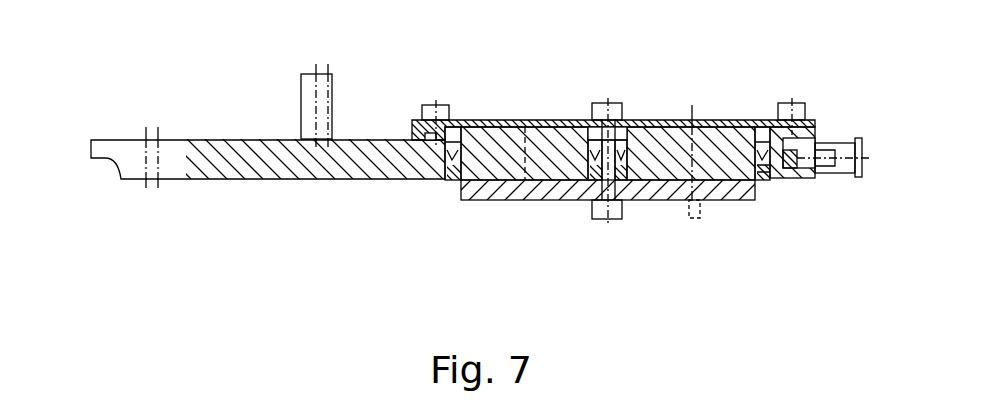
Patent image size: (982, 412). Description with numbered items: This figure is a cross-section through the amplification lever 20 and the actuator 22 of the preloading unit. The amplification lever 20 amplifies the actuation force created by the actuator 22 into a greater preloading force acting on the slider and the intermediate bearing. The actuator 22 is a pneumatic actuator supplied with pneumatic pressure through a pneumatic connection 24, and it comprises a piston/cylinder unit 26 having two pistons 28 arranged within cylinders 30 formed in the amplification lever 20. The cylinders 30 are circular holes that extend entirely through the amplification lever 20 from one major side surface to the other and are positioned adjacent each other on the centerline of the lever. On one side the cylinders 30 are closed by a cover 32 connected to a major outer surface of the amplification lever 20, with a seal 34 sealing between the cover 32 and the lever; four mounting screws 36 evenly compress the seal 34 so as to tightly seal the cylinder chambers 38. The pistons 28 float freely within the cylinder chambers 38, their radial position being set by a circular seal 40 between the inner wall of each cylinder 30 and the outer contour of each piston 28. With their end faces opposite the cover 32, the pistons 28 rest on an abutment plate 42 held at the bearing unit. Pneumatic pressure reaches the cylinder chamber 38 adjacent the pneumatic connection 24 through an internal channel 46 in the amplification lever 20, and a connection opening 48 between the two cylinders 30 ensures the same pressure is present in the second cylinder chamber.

The amplification lever 20 is at (376, 166).
The actuator 22 is at (605, 237).
The pneumatic connection 24 is at (842, 160).
The piston/cylinder unit 26 is at (507, 155).
The piston 28 is at (494, 143).
The cylinder 30 is at (445, 140).
The cover 32 is at (539, 125).
The seal 34 is at (422, 140).
The mounting screw 36 is at (597, 108).
The cylinder chamber 38 is at (590, 130).
The circular seal 40 is at (761, 148).
The abutment plate 42 is at (496, 183).
The internal channel 46 is at (790, 160).
The connection opening 48 is at (627, 140).